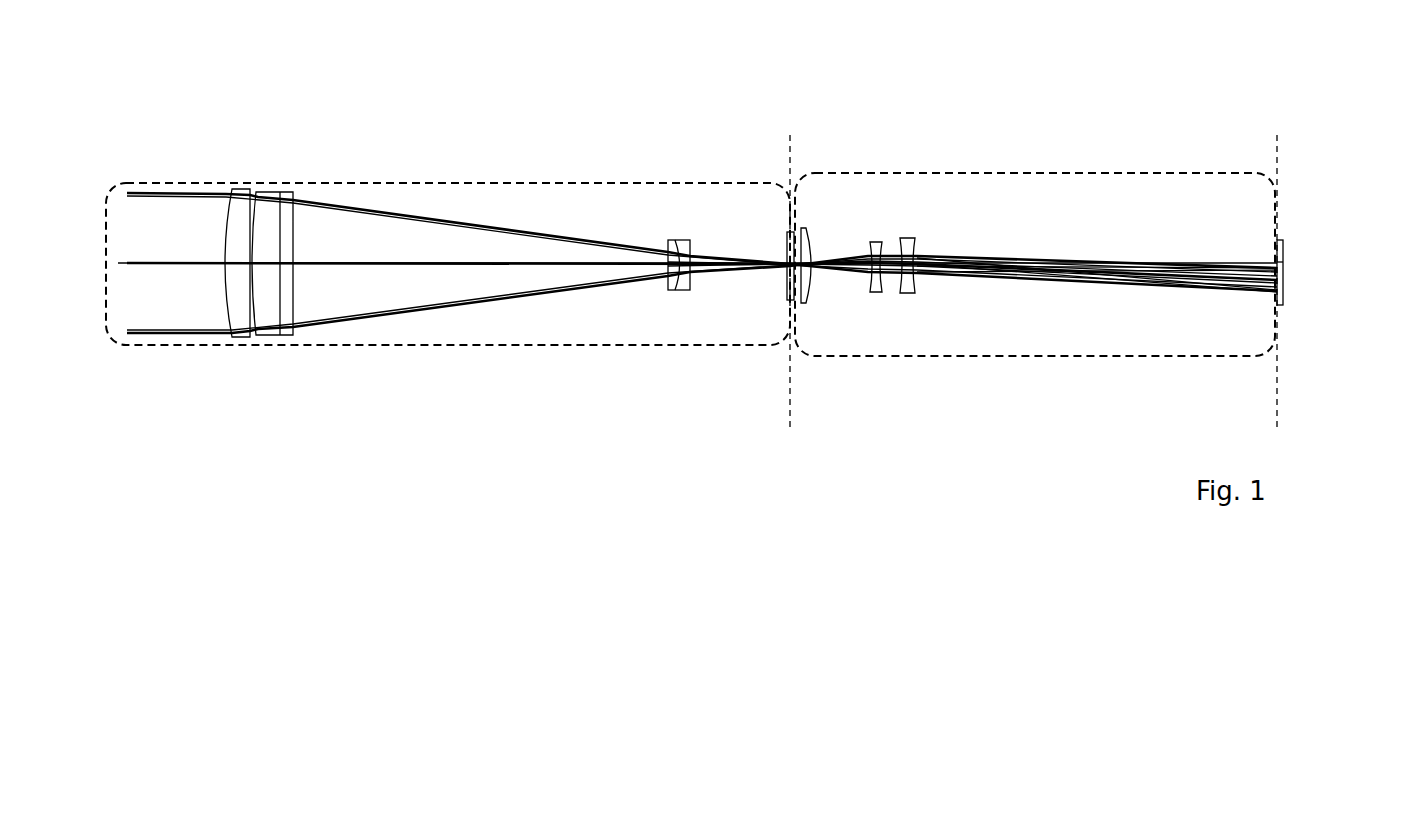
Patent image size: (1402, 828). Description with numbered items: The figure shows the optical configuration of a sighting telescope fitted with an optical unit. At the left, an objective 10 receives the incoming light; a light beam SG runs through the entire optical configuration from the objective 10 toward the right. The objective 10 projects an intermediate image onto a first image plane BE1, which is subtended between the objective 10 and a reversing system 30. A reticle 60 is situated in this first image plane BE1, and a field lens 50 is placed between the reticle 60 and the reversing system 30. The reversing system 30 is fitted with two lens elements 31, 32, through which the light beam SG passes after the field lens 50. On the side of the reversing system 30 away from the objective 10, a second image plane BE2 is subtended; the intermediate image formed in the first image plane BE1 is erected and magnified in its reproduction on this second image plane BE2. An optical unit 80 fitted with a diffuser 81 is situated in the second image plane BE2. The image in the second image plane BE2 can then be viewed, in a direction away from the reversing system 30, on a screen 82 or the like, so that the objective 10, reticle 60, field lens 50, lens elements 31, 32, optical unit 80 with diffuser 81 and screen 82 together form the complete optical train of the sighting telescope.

The objective 10 is at (327, 183).
The light beam SG is at (352, 207).
The first image plane BE1 is at (790, 267).
The reticle 60 is at (789, 298).
The field lens 50 is at (806, 290).
The reversing system 30 is at (1035, 194).
The lens element 31 is at (873, 240).
The lens element 32 is at (911, 238).
The second image plane BE2 is at (1277, 269).
The optical unit 80 is at (1329, 234).
The diffuser 81 is at (1281, 257).
The screen 82 is at (1286, 275).